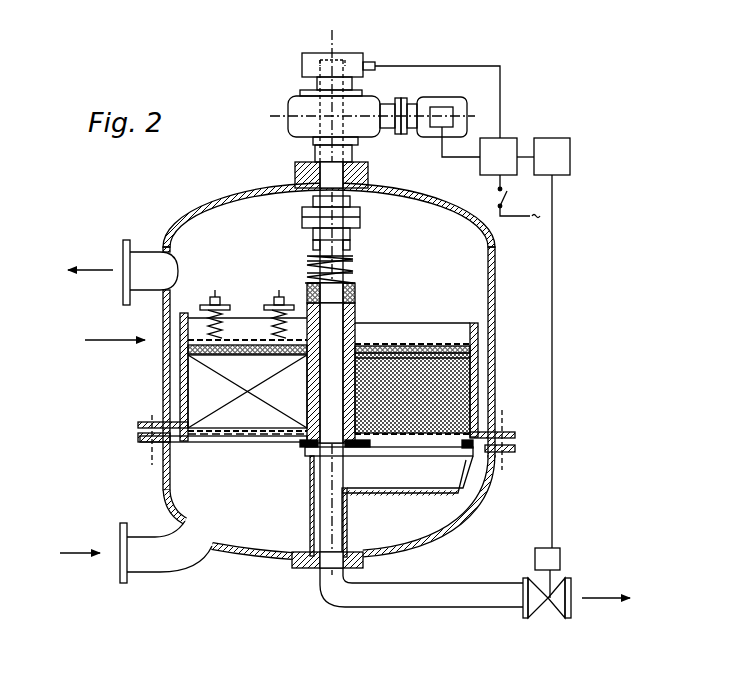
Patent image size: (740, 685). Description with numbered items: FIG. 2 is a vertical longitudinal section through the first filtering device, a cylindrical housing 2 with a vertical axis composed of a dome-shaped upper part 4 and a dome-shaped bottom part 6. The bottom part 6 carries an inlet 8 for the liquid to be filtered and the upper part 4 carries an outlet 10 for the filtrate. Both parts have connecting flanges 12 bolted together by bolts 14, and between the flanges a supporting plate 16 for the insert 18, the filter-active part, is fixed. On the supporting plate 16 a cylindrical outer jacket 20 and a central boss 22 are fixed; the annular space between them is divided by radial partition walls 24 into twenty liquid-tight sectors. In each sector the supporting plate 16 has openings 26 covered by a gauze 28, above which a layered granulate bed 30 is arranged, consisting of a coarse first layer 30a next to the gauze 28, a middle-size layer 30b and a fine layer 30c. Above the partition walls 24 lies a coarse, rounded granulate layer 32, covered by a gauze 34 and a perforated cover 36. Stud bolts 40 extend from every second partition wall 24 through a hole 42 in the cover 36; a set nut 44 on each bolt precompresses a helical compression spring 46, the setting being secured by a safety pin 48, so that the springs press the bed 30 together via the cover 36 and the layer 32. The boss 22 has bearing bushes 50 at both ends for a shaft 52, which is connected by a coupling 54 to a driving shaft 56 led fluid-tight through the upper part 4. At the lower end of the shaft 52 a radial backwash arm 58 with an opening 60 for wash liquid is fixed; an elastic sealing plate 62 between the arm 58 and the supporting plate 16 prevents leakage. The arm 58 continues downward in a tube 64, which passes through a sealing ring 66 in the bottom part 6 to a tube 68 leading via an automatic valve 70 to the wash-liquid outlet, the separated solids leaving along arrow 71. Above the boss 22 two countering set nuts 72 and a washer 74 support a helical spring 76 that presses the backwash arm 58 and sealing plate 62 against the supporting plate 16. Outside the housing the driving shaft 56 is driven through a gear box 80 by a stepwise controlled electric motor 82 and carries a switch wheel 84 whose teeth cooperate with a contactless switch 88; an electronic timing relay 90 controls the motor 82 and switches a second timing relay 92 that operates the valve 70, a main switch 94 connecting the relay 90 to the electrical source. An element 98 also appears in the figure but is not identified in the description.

The housing 2 is at (115, 329).
The upper part 4 is at (244, 186).
The bottom part 6 is at (252, 556).
The inlet 8 is at (148, 565).
The outlet 10 is at (140, 256).
The connecting flanges 12 is at (138, 424).
The bolts 14 is at (150, 452).
The supporting plate 16 is at (184, 442).
The insert 18 is at (444, 318).
The outer jacket 20 is at (190, 343).
The boss 22 is at (356, 328).
The partition walls 24 is at (200, 385).
The openings 26 is at (213, 438).
The gauze 28 is at (242, 440).
The granulate bed 30 is at (400, 374).
The first layer 30a is at (458, 424).
The next layer 30b is at (460, 398).
The fine size granulate layer 30c is at (458, 378).
The coarse grained granulate layer 32 is at (462, 357).
The gauze 34 is at (402, 346).
The perforated cover 36 is at (454, 326).
The stud bolts 40 is at (262, 360).
The hole 42 is at (203, 335).
The set nut 44 is at (276, 298).
The compression spring 46 is at (268, 332).
The safety pin 48 is at (217, 298).
The bearing bushes 50 is at (353, 305).
The shaft 52 is at (354, 285).
The coupling 54 is at (361, 223).
The driving shaft 56 is at (345, 170).
The backwash arm 58 is at (402, 492).
The opening 60 is at (432, 450).
The sealing plate 62 is at (352, 450).
The tube 64 is at (343, 540).
The sealing ring 66 is at (305, 550).
The tube 68 is at (382, 607).
The automatic valve 70 is at (555, 612).
The arrow 71 is at (606, 588).
The set nuts 72 is at (352, 250).
The washer 74 is at (307, 258).
The helical spring 76 is at (307, 272).
The gear box 80 is at (292, 104).
The electric motor 82 is at (424, 102).
The switch wheel 84 is at (318, 53).
The switch 88 is at (372, 62).
The timing relay 90 is at (508, 140).
The second timing relay 92 is at (546, 140).
The main switch 94 is at (496, 193).
The bearing 98 is at (308, 292).